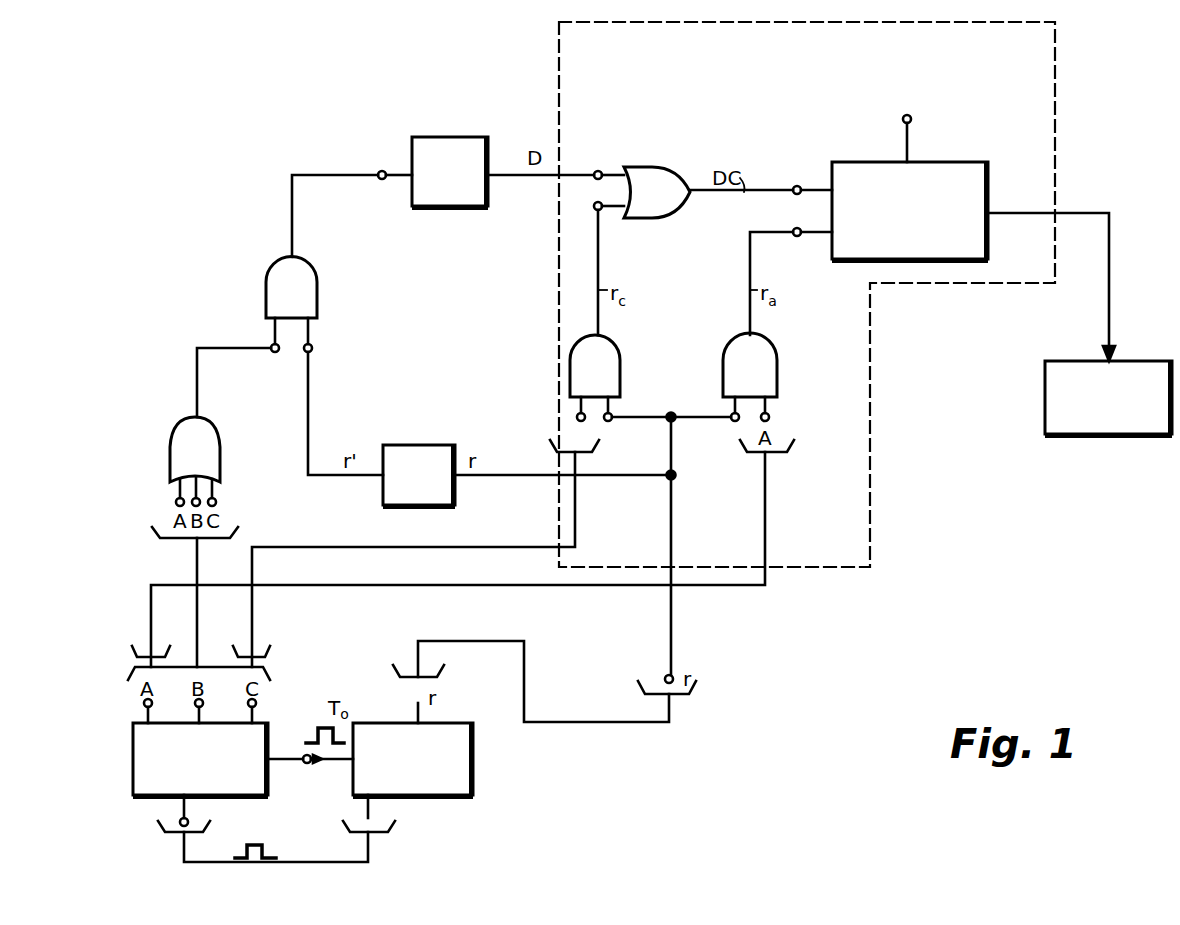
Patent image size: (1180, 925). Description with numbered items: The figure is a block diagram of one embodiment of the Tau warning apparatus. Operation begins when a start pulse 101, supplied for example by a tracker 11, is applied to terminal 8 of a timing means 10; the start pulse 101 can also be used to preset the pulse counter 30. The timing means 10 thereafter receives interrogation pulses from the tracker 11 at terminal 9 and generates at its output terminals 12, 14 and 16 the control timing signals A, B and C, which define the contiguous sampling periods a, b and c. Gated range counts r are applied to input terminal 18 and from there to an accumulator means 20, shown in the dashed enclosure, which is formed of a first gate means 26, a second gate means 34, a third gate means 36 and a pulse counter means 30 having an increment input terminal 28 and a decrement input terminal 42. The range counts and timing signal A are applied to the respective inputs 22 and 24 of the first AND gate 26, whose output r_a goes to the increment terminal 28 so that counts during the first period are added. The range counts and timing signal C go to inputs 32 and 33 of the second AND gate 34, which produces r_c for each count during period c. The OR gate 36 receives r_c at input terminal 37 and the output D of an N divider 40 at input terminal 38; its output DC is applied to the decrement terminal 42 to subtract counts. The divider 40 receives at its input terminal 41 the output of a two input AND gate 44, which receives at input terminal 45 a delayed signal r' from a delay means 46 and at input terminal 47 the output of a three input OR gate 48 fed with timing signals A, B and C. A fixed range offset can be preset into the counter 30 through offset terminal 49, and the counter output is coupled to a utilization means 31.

The terminal 8 is at (189, 824).
The terminal 9 is at (307, 764).
The timing means 10 is at (133, 766).
The tracker 11 is at (473, 777).
The output terminal 12 is at (144, 703).
The output terminal 14 is at (195, 703).
The output terminal 16 is at (256, 703).
The input terminal 18 is at (654, 665).
The accumulator means 20 is at (966, 96).
The input 22 is at (731, 415).
The input 24 is at (769, 417).
The first gate means 26 is at (777, 362).
The increment input terminal 28 is at (797, 236).
The pulse counter means 30 is at (990, 178).
The utilization means 31 is at (1045, 410).
The input 32 is at (611, 414).
The input 33 is at (577, 417).
The second gate means 34 is at (620, 362).
The third gate means 36 is at (638, 167).
The input terminal 37 is at (593, 206).
The input terminal 38 is at (597, 170).
The N divider 40 is at (471, 137).
The input terminal 41 is at (380, 170).
The decrement input terminal 42 is at (797, 185).
The AND gate 44 is at (266, 266).
The input terminal 45 is at (312, 349).
The delay means 46 is at (426, 445).
The input terminal 47 is at (271, 346).
The OR gate 48 is at (220, 460).
The offset terminal 49 is at (902, 119).
The start pulse 101 is at (266, 844).